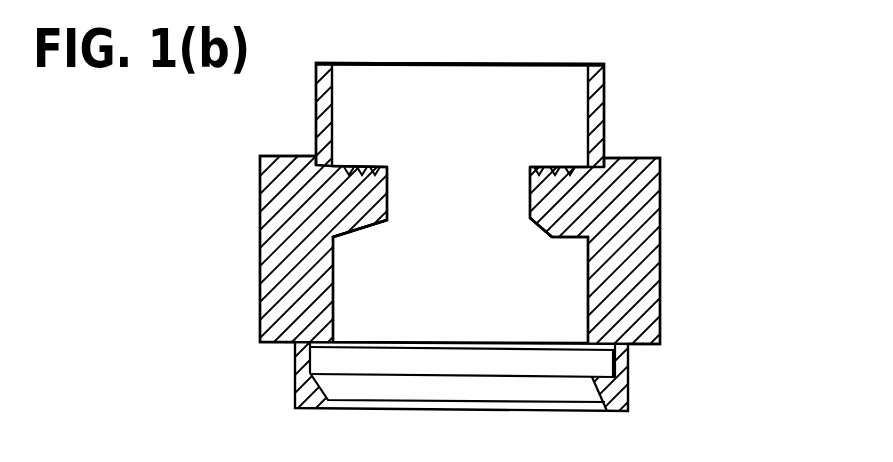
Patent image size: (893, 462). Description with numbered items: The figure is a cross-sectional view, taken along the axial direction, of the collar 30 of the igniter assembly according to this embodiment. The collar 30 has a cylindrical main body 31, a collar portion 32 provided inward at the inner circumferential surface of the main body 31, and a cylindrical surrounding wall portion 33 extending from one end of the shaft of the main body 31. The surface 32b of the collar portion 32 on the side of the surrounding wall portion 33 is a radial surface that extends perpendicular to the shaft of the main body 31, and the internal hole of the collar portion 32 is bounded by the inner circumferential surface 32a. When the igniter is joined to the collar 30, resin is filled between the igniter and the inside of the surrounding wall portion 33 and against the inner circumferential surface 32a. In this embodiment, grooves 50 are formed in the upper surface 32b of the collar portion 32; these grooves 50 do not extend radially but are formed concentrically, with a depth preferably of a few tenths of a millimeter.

The collar 30 is at (670, 262).
The main body 31 is at (650, 206).
The collar portion 32 is at (567, 238).
The inner circumferential surface 32a is at (530, 215).
The surface of the collar portion 32b is at (547, 163).
The surrounding wall portion 33 is at (604, 97).
The grooves 50 is at (375, 172).